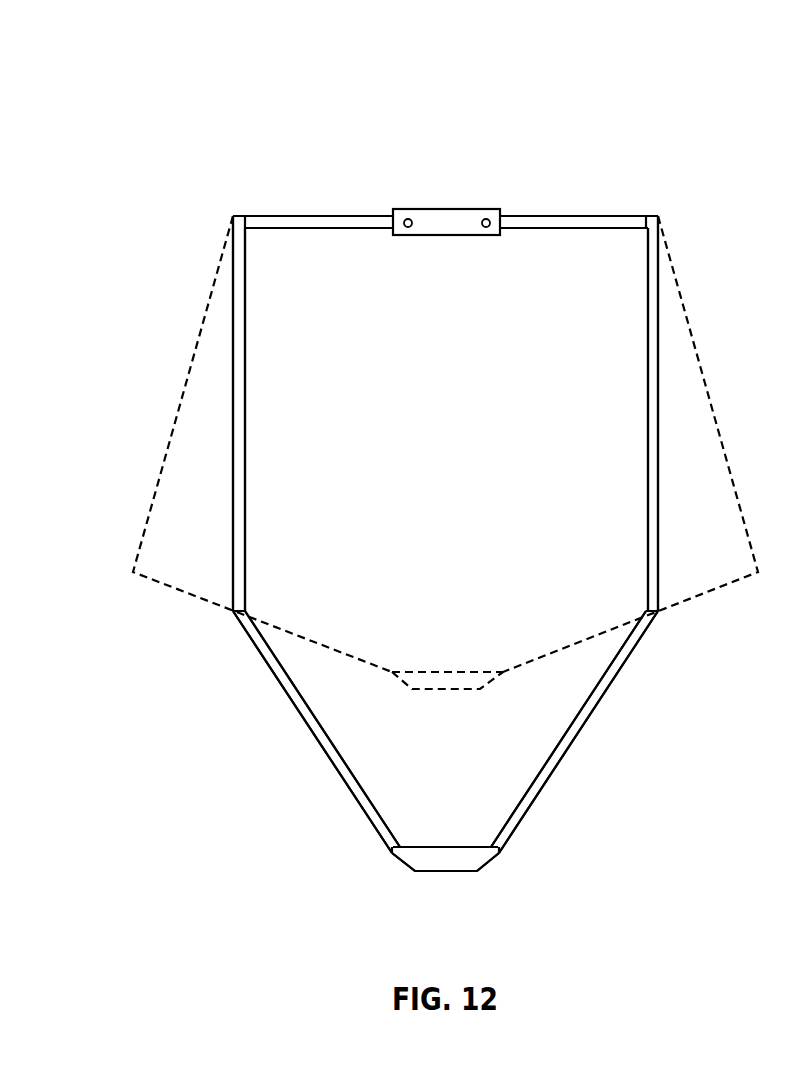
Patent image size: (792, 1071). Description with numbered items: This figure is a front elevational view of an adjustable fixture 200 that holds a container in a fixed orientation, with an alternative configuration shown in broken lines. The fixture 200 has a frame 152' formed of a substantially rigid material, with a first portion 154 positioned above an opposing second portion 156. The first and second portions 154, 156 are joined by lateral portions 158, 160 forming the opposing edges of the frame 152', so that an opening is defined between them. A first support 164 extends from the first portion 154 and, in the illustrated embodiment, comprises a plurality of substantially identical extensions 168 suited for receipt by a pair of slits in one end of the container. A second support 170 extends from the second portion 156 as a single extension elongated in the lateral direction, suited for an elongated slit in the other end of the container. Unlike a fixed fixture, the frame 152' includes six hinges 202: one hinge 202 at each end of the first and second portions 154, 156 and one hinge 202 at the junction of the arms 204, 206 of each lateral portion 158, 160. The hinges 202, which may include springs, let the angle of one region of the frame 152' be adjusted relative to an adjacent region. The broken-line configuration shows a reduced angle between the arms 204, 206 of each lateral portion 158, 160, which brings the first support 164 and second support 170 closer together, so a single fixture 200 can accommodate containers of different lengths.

The fixture 200 is at (126, 160).
The frame 152' is at (445, 369).
The first portion 154 is at (305, 216).
The second portion 156 is at (445, 873).
The lateral portion 158 is at (312, 748).
The lateral portion 160 is at (590, 746).
The first support 164 is at (500, 204).
The extensions 168 is at (406, 230).
The second support 170 is at (445, 859).
The hinges 202 is at (237, 217).
The arm 204 is at (238, 410).
The arm 206 is at (348, 770).